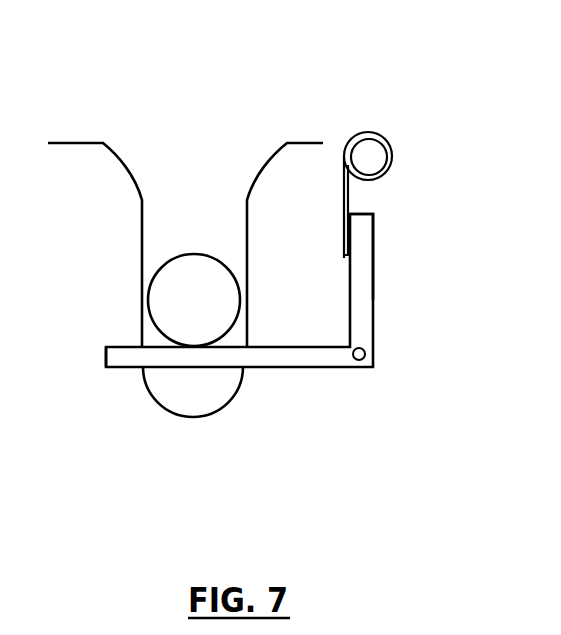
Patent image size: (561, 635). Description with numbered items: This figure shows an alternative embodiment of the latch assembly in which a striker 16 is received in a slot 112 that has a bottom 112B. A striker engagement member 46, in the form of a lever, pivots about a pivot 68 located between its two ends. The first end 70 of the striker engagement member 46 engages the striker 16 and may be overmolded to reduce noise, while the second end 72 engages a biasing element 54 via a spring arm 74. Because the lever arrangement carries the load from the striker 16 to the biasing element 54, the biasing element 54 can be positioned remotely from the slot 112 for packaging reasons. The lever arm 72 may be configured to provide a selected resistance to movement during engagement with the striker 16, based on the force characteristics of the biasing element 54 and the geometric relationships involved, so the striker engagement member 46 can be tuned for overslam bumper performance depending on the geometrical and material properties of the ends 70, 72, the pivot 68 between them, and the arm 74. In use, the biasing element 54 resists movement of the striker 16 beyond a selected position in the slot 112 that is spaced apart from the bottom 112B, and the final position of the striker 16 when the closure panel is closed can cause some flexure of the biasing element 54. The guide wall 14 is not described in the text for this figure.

The guide wall 14 is at (78, 170).
The striker 16 is at (177, 253).
The slot 112 is at (208, 183).
The bottom of the slot 112B is at (167, 415).
The striker engagement member 46 is at (325, 368).
The first end 70 is at (112, 347).
The second end 72 is at (373, 273).
The pivot 68 is at (367, 352).
The biasing element 54 is at (388, 143).
The spring arm 74 is at (350, 197).